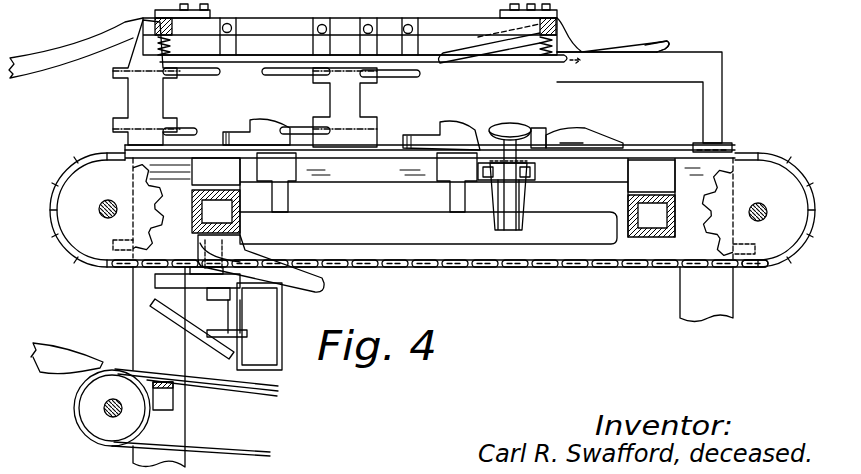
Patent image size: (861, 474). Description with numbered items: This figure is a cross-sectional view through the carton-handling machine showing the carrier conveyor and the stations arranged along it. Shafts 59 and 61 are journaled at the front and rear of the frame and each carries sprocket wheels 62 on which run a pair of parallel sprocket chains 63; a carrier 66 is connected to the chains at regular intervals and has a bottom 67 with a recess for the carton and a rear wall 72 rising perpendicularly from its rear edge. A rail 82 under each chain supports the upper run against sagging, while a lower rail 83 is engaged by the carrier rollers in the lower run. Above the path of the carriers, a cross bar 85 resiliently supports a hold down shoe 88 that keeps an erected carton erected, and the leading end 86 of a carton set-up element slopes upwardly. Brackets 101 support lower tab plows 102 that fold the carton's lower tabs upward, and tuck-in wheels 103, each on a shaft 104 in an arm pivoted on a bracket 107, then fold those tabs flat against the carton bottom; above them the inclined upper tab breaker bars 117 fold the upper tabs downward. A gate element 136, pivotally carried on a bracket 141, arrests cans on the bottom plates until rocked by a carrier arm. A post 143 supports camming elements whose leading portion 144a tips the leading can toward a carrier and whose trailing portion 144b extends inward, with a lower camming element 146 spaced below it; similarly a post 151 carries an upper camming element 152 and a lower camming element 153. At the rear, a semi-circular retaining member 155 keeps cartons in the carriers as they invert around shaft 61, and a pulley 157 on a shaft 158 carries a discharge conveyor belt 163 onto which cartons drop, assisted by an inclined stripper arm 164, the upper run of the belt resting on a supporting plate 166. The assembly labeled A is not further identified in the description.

The shaft 59 is at (768, 213).
The shaft 61 is at (106, 214).
The sprocket wheel 62 is at (770, 177).
The sprocket chain 63 is at (752, 150).
The carrier 66 is at (210, 348).
The bottom 67 is at (260, 290).
The rear wall 72 is at (228, 311).
The rail 82 is at (572, 178).
The rail 83 is at (390, 238).
The cross bar 85 is at (565, 32).
The leading end 86 is at (664, 40).
The hold down shoe 88 is at (516, 60).
The bracket 101 is at (560, 132).
The lower tab plow 102 is at (563, 137).
The tuck-in wheel 103 is at (509, 122).
The shaft 104 is at (506, 178).
The bracket 107 is at (528, 196).
The upper tab breaker bar 117 is at (470, 52).
The gate element 136 is at (476, 121).
The bracket 141 is at (440, 182).
The post 143 is at (358, 108).
The leading portion 144a is at (402, 76).
The trailing portion 144b is at (300, 78).
The lower camming element 146 is at (300, 126).
The post 151 is at (135, 98).
The upper camming element 152 is at (184, 76).
The lower camming element 153 is at (192, 129).
The retaining member 155 is at (68, 362).
The pulley 157 is at (90, 418).
The shaft 158 is at (112, 412).
The discharge conveyor belt 163 is at (203, 385).
The stripper arm 164 is at (327, 287).
The supporting plate 166 is at (263, 395).
The assembly A is at (282, 333).